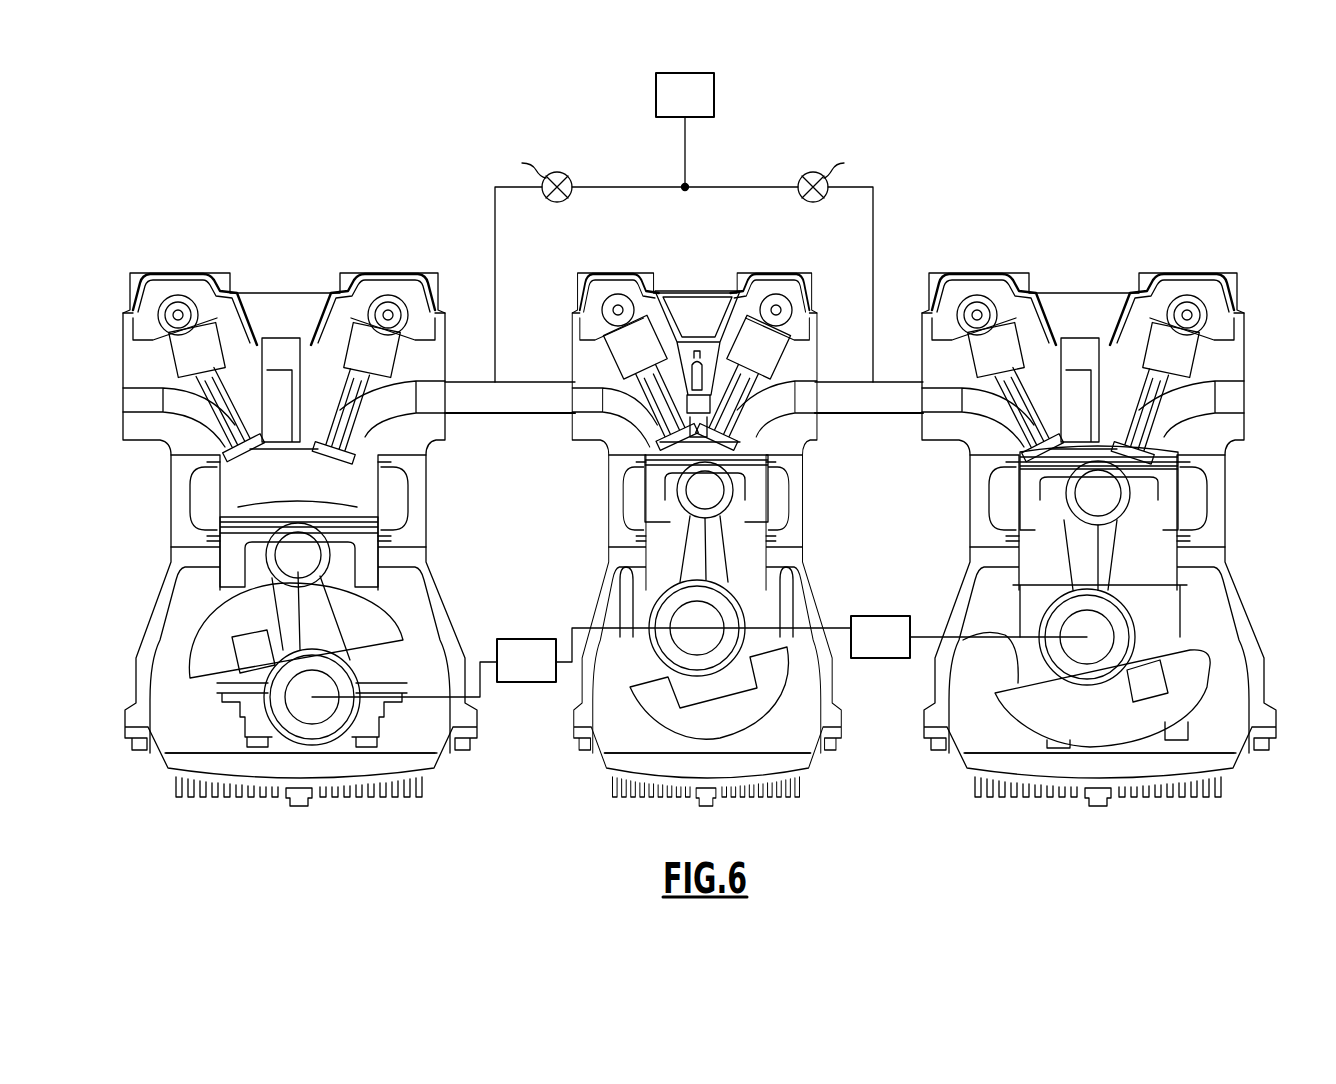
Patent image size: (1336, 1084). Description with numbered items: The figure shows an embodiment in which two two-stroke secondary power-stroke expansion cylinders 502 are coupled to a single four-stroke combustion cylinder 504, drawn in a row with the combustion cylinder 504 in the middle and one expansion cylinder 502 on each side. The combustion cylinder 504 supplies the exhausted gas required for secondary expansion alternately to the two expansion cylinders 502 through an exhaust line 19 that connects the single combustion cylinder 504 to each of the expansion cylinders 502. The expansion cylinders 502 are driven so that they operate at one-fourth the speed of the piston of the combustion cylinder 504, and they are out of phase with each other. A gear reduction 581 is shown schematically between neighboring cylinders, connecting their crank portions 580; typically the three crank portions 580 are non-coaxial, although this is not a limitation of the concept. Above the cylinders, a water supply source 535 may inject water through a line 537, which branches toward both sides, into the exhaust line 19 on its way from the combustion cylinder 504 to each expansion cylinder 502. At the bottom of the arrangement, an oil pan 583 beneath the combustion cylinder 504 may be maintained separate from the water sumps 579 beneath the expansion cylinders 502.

The exhaust line 19 is at (537, 403).
The two-stroke secondary power-stroke expansion cylinder 502 is at (288, 262).
The four-stroke combustion cylinder 504 is at (709, 266).
The water supply source 535 is at (656, 88).
The line 537 is at (495, 187).
The water sump 579 is at (208, 768).
The crank portion 580 is at (687, 617).
The gear reduction 581 is at (527, 640).
The oil pan 583 is at (728, 768).